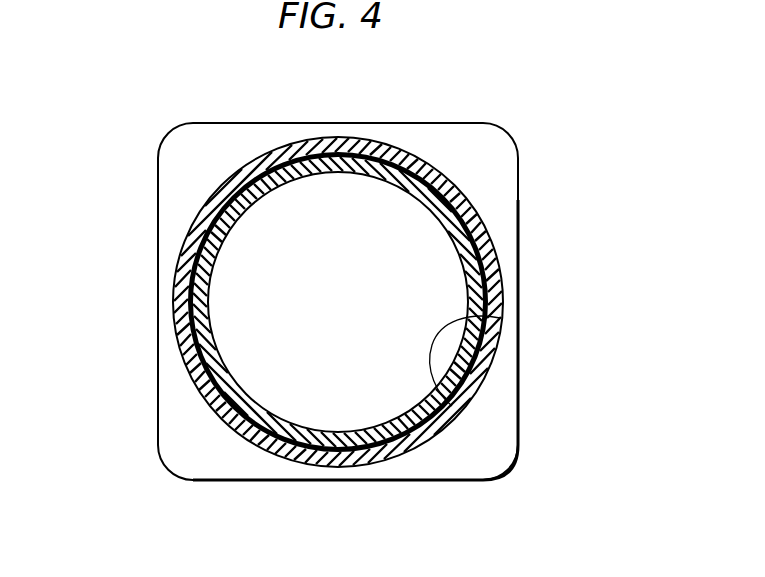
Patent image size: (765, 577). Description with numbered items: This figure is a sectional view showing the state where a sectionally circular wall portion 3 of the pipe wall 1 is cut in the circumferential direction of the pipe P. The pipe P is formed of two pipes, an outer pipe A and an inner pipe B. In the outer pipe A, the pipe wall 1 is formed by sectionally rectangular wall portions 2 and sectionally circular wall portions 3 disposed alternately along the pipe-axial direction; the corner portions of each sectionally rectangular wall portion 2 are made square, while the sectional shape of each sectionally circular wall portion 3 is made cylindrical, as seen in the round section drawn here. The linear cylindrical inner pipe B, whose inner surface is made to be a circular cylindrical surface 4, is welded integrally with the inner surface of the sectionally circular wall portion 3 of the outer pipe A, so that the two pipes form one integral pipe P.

The pipe wall 1 is at (520, 165).
The sectionally rectangular wall portion 2 is at (508, 217).
The sectionally circular wall portion 3 is at (448, 406).
The circular cylindrical surface 4 is at (500, 318).
The outer pipe A is at (177, 283).
The inner pipe B is at (193, 350).
The pipe P is at (327, 298).